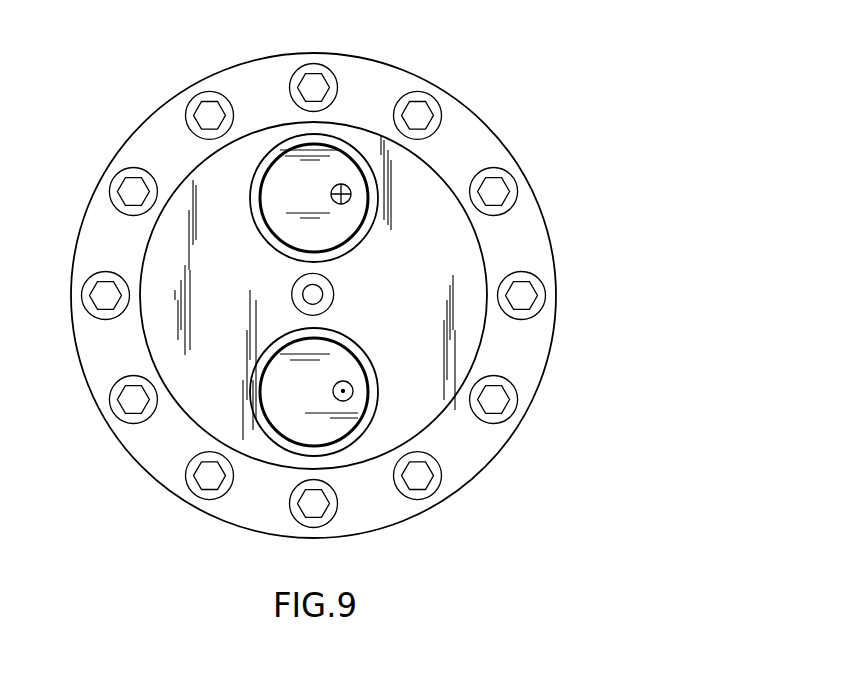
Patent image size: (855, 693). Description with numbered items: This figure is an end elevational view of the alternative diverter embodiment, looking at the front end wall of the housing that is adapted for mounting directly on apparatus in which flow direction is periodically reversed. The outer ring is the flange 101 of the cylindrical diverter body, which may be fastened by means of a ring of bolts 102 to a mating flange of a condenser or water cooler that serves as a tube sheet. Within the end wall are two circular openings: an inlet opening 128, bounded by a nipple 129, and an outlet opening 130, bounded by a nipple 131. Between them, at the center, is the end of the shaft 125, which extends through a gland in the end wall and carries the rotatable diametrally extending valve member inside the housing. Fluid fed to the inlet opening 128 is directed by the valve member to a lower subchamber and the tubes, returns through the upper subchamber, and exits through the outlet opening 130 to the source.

The flange 101 is at (500, 140).
The bolts 102 is at (495, 395).
The shaft 125 is at (322, 293).
The inlet opening 128 is at (343, 225).
The nipple 129 is at (372, 205).
The outlet opening 130 is at (342, 360).
The nipple 131 is at (378, 392).